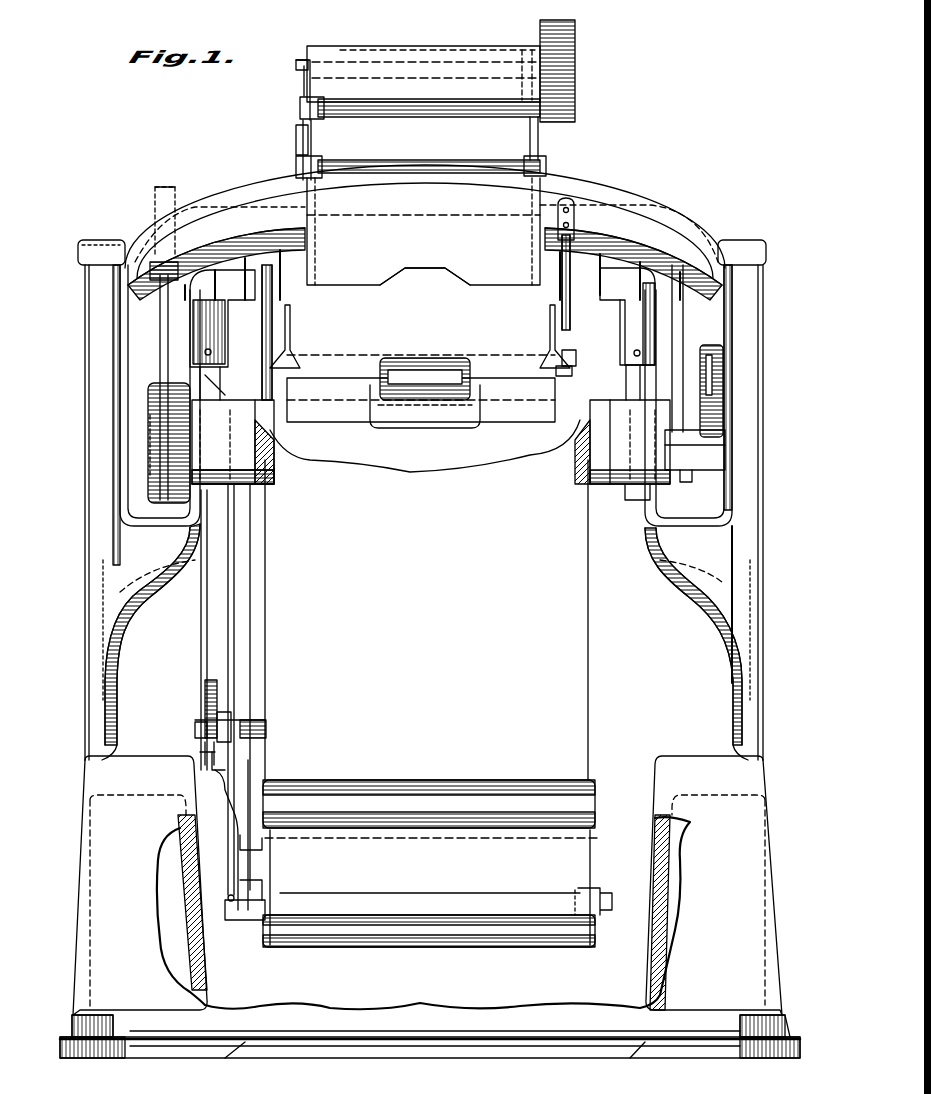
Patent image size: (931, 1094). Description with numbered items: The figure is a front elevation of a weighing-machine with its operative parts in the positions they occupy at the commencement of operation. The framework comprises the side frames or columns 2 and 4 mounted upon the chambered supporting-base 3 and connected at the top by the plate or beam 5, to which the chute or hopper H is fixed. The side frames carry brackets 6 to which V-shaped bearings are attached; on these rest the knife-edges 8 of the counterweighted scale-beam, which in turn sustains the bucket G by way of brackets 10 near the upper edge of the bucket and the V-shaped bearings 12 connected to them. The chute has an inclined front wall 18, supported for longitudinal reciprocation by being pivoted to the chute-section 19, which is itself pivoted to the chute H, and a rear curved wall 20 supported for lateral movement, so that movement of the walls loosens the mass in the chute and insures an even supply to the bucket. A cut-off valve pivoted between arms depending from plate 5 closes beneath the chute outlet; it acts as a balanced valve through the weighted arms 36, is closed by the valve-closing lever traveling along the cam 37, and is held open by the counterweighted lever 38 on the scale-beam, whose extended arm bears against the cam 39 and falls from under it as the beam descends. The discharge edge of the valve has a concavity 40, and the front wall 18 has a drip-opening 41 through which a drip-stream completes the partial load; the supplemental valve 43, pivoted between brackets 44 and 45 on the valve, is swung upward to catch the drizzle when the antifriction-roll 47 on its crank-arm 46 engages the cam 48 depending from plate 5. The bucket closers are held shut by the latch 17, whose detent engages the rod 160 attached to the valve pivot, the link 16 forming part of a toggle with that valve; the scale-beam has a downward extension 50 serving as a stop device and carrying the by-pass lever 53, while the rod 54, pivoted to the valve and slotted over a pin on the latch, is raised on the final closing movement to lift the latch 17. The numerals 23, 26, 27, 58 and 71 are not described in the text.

The chute or hopper H is at (437, 58).
The side frame or column 2 is at (100, 462).
The chambered supporting-base 3 is at (430, 907).
The side frame or column 4 is at (752, 488).
The plate or beam 5 is at (628, 195).
The bracket 6 is at (151, 512).
The pivot or knife-edge 8 is at (185, 403).
The bracket 10 is at (195, 300).
The V-shaped bearing 12 is at (188, 365).
The link 16 is at (246, 920).
The latch 17 is at (230, 716).
The front wall of the chute 18 is at (423, 231).
The chute-section 19 is at (420, 148).
The rear curved wall of the chute 20 is at (300, 102).
The bracket 23 is at (296, 148).
The shaft 26 is at (372, 60).
The gear 27 is at (568, 56).
The balance-weight 36 is at (612, 248).
The cam 37 is at (688, 368).
The counterweighted lever 38 is at (163, 340).
The cam 39 is at (170, 270).
The depression or concavity 40 is at (420, 372).
The drip-opening 41 is at (440, 268).
The supplemental valve 43 is at (432, 425).
The bracket 44 is at (288, 330).
The bracket 45 is at (552, 330).
The crank-arm 46 is at (556, 371).
The antifriction-roll 47 is at (560, 356).
The cam 48 is at (560, 282).
The stop device 50 is at (202, 622).
The by-pass lever 53 is at (205, 745).
The rod 54 is at (236, 632).
The rod 58 is at (252, 600).
The cross bar 71 is at (350, 380).
The rod 160 is at (242, 850).
The bucket G is at (426, 600).